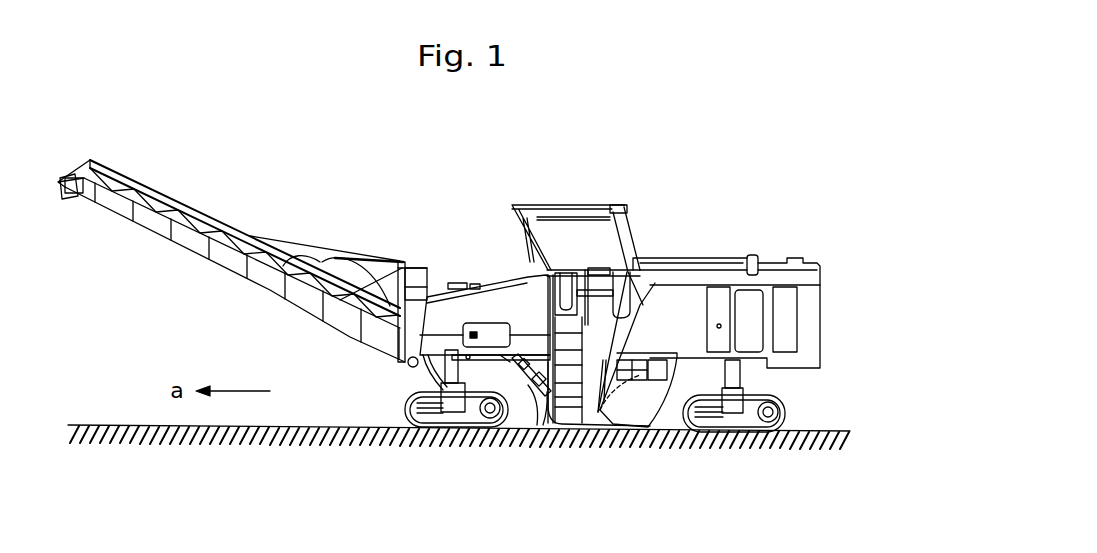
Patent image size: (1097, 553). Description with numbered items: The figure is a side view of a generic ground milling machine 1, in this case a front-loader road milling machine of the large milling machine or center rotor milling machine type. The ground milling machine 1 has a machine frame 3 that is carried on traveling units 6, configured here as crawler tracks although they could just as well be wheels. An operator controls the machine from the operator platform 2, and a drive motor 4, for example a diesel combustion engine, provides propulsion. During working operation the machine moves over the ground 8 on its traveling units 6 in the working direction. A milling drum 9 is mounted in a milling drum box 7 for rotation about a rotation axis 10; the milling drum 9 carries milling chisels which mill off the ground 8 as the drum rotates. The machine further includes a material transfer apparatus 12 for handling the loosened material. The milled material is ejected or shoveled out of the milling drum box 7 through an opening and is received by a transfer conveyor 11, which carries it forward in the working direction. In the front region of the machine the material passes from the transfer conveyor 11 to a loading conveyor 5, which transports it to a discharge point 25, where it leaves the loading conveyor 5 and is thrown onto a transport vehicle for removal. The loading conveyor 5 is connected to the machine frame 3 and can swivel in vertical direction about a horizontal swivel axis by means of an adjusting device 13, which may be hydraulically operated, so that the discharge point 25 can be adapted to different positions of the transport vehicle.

The ground milling machine 1 is at (640, 176).
The operator platform 2 is at (582, 238).
The machine frame 3 is at (472, 298).
The drive motor 4 is at (688, 303).
The loading conveyor 5 is at (268, 250).
The traveling units 6 is at (436, 432).
The milling drum box 7 is at (653, 410).
The ground 8 is at (300, 437).
The milling drum 9 is at (620, 428).
The rotation axis 10 is at (603, 412).
The transfer conveyor 11 is at (522, 390).
The material transfer apparatus 12 is at (422, 253).
The adjusting device 13 is at (360, 262).
The discharge point 25 is at (77, 172).